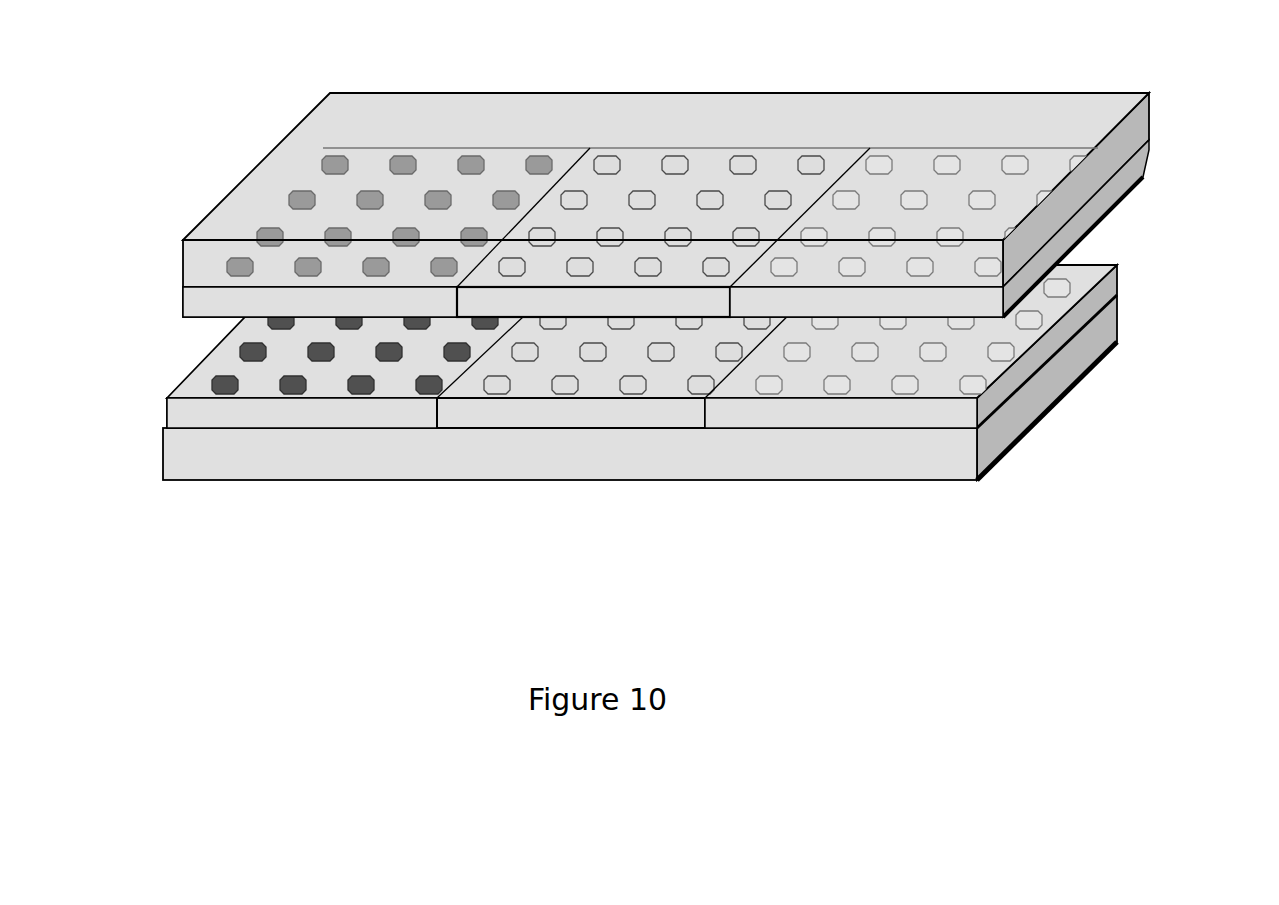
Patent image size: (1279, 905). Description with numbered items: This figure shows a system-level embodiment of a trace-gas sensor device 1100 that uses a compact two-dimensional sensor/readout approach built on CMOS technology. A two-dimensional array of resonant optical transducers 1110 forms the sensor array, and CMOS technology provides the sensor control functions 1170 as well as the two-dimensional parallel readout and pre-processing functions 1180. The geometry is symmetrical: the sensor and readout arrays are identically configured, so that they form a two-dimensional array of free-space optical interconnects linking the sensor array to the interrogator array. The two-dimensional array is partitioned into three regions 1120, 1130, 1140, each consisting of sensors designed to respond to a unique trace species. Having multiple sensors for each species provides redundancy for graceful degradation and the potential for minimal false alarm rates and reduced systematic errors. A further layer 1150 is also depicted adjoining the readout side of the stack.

The trace-gas sensor device 1100 is at (667, 307).
The 2D array of resonant optical transducers 1110 is at (587, 431).
The first region 1120 is at (303, 425).
The second region 1130 is at (568, 430).
The third region 1140 is at (838, 428).
The optical substrate layer with PDs or sensors 1150 is at (1120, 205).
The sensor control functions 1170 is at (1070, 365).
The 2D parallel readout and pre-processing functions 1180 is at (1138, 123).